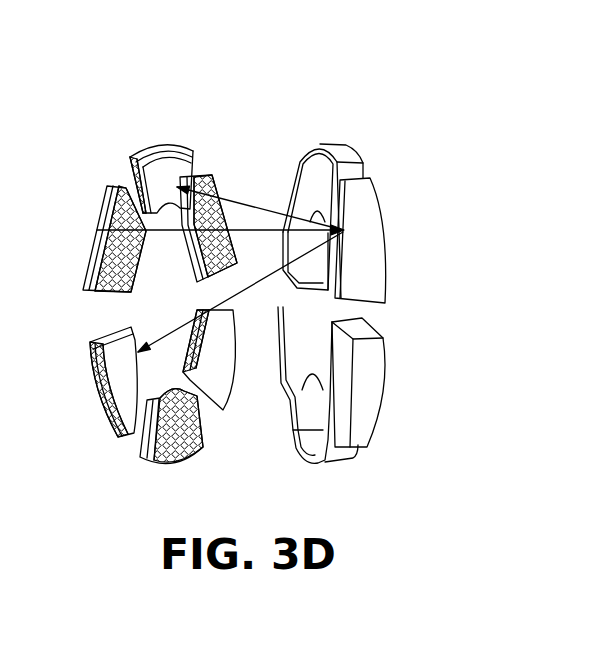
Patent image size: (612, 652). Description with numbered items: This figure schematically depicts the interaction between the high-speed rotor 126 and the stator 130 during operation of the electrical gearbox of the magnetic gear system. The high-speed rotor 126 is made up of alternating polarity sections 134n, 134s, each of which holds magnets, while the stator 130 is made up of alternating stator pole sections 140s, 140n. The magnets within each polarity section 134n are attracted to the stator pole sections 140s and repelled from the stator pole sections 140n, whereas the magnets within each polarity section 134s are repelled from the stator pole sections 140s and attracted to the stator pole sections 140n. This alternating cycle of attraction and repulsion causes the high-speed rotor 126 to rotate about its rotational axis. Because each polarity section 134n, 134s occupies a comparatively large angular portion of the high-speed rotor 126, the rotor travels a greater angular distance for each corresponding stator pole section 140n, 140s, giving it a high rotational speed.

The stator 130 is at (152, 116).
The high-speed rotor 126 is at (348, 106).
The stator pole section 140s is at (100, 237).
The stator pole section 140n is at (97, 358).
The polarity section 134n is at (370, 252).
The polarity section 134s is at (370, 382).